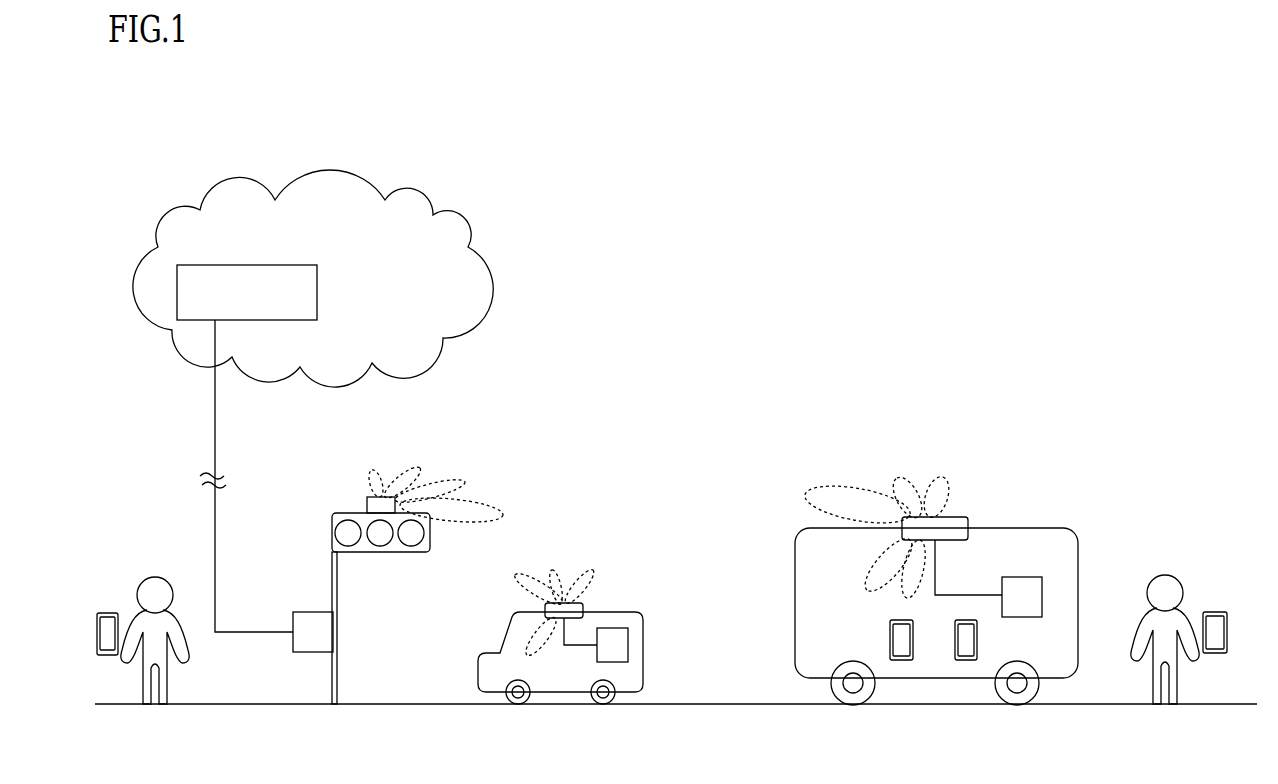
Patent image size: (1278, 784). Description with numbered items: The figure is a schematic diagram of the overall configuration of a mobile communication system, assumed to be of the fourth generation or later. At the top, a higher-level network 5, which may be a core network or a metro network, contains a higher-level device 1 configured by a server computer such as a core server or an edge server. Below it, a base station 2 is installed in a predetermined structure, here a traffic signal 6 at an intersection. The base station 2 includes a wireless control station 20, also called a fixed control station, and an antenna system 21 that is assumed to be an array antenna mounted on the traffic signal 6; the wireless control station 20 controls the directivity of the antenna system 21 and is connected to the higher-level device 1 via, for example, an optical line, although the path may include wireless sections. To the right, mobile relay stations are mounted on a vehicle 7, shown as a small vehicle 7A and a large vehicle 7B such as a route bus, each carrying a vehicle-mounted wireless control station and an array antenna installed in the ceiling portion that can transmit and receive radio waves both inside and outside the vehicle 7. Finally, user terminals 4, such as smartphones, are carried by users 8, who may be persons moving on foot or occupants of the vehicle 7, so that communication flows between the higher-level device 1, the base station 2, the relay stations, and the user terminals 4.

The higher-level device 1 is at (177, 288).
The higher-level network 5 is at (332, 168).
The base station 2 is at (369, 557).
The antenna system 21 is at (367, 501).
The wireless control station 20 is at (305, 597).
The traffic signal 6 is at (338, 590).
The vehicle 7 is at (728, 553).
The small vehicle 7A is at (536, 598).
The large vehicle 7B is at (886, 553).
The user terminal 4 is at (106, 612).
The user 8 is at (155, 577).